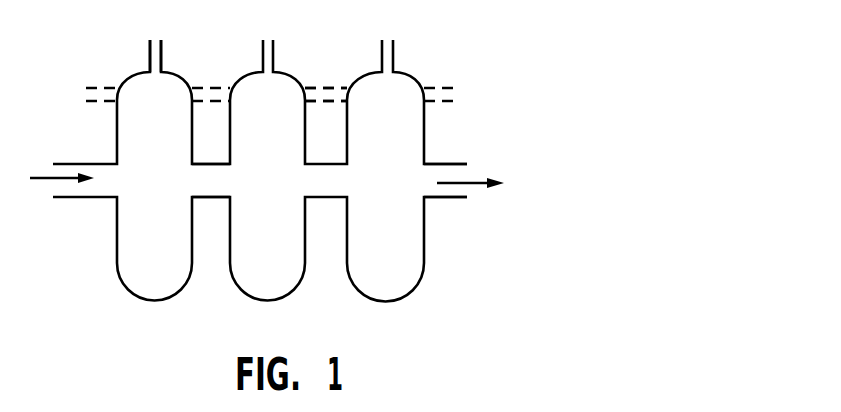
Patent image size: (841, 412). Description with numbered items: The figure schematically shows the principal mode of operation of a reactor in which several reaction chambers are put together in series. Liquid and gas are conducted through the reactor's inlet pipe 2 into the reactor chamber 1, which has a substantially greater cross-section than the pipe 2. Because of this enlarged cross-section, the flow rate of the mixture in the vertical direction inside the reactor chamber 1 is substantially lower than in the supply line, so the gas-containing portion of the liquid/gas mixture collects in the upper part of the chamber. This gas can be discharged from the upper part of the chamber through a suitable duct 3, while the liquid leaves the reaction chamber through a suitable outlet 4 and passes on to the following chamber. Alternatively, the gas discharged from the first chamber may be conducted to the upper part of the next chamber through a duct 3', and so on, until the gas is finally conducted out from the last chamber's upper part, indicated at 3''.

The reactor chamber 1 is at (135, 263).
The inlet pipe 2 is at (73, 167).
The duct 3 is at (183, 42).
The duct 3' is at (332, 50).
The outlet 3'' is at (464, 156).
The outlet 4 is at (212, 198).